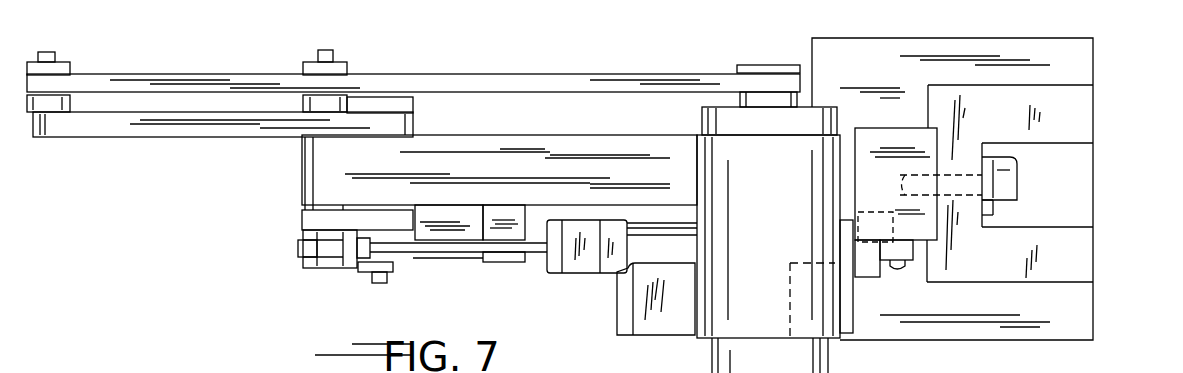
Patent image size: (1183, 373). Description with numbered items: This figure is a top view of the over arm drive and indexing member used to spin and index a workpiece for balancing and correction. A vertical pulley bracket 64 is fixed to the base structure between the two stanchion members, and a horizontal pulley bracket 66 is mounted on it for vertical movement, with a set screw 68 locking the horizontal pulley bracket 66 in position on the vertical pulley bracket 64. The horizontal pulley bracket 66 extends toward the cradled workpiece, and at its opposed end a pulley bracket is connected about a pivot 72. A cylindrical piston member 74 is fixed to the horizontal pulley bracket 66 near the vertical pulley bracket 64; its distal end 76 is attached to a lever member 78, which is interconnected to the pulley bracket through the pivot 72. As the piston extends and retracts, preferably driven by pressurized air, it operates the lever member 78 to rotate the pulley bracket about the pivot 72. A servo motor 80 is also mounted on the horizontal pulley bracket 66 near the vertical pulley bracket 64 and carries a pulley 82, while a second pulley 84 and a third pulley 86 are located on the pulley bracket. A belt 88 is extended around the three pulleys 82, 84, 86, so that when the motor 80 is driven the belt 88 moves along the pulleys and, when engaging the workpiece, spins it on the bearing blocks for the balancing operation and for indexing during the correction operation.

The vertical pulley bracket 64 is at (1063, 108).
The horizontal pulley bracket 66 is at (920, 222).
The set screw 68 is at (1005, 185).
The pivot 72 is at (378, 285).
The cylindrical piston member 74 is at (578, 265).
The distal end 76 is at (350, 256).
The lever member 78 is at (302, 222).
The servo motor 80 is at (797, 239).
The pulley 82 is at (766, 64).
The second pulley 84 is at (345, 62).
The third pulley 86 is at (72, 62).
The belt 88 is at (573, 82).